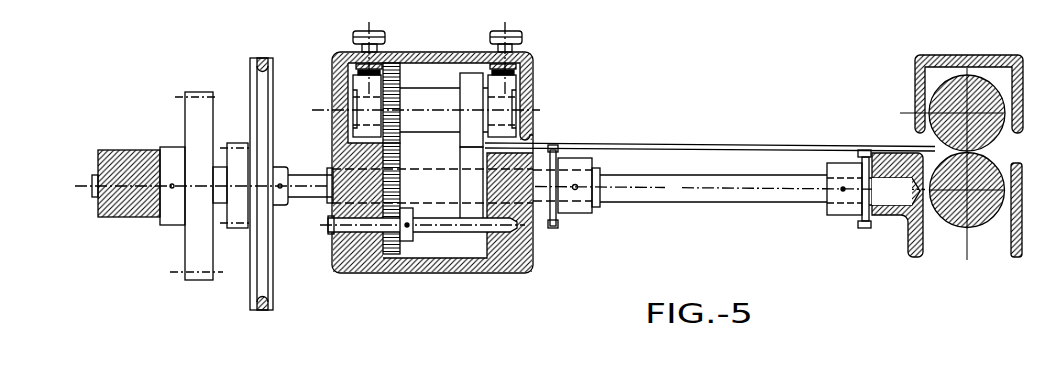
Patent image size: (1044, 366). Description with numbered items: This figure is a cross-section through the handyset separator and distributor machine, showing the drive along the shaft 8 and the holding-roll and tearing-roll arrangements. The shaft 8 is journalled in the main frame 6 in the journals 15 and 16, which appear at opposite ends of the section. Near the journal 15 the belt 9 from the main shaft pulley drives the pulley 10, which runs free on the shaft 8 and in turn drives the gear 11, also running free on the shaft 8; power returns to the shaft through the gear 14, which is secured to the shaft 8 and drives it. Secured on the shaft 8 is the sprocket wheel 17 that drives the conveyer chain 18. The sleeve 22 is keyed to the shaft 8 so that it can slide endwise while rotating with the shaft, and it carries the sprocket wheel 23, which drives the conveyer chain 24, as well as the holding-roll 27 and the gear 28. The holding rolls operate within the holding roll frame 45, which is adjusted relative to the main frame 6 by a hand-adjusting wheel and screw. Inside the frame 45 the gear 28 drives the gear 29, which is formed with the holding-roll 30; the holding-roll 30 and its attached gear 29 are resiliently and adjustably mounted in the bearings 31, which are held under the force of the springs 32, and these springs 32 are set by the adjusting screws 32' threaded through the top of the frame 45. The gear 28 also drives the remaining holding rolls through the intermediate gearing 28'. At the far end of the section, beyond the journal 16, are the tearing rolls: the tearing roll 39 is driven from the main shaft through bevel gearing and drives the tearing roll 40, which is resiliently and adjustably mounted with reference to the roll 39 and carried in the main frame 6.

The main frame 6 is at (1023, 80).
The shaft 8 is at (557, 185).
The belt 9 is at (262, 307).
The pulley 10 is at (273, 277).
The gear 11 is at (239, 228).
The gear 14 is at (187, 254).
The journal 15 is at (136, 152).
The journal 16 is at (883, 184).
The sprocket wheel 17 is at (856, 216).
The conveyer chain 18 is at (866, 226).
The sleeve 22 is at (597, 174).
The sprocket wheel 23 is at (565, 212).
The conveyer chain 24 is at (558, 227).
The holding-roll 27 is at (471, 183).
The gear 28 is at (407, 198).
The intermediate gearing 28' is at (422, 260).
The gear 29 is at (401, 85).
The holding-roll 30 is at (471, 110).
The bearings 31 is at (426, 106).
The springs 32 is at (434, 71).
The adjusting screws 32' is at (433, 53).
The tearing roll 39 is at (967, 227).
The tearing roll 40 is at (993, 136).
The holding roll frame 45 is at (509, 272).